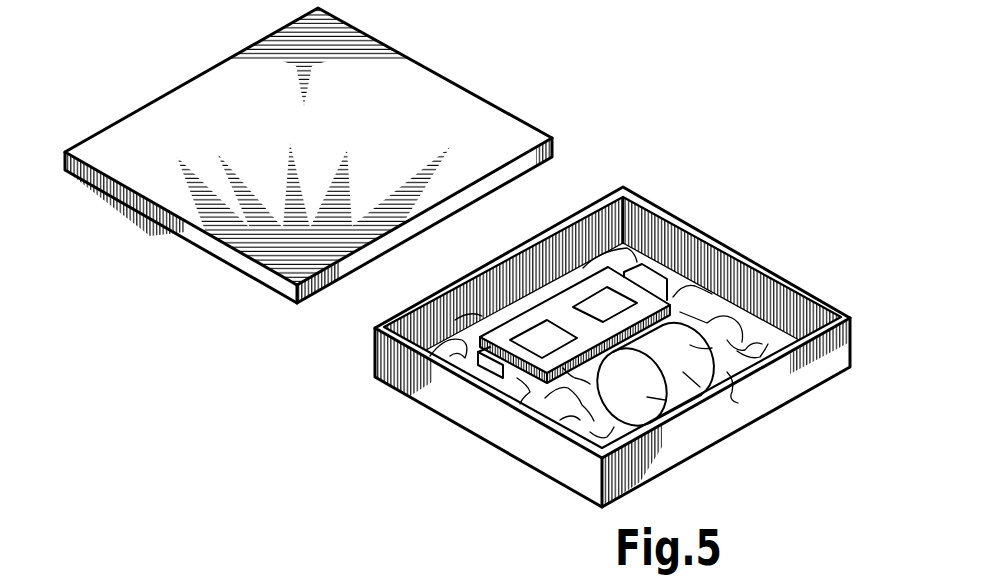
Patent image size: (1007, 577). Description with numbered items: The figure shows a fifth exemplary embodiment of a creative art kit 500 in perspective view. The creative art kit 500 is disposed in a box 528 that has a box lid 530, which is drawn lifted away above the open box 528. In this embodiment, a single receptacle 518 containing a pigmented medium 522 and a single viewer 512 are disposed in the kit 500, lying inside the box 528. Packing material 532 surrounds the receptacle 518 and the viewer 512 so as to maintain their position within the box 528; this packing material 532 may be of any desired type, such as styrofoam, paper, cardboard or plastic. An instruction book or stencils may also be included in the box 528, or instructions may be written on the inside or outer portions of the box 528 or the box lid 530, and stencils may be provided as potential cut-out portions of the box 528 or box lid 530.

The creative art kit 500 is at (690, 88).
The viewer 512 is at (658, 292).
The receptacle 518 is at (683, 373).
The pigmented medium 522 is at (567, 433).
The box 528 is at (398, 388).
The box lid 530 is at (170, 120).
The packing material 532 is at (762, 342).